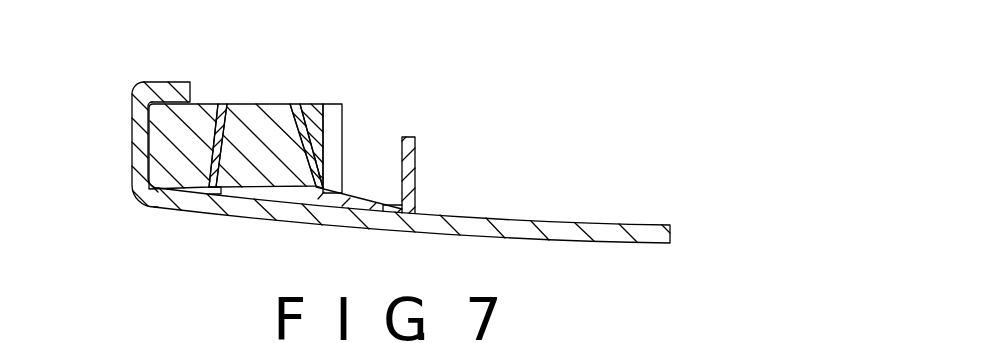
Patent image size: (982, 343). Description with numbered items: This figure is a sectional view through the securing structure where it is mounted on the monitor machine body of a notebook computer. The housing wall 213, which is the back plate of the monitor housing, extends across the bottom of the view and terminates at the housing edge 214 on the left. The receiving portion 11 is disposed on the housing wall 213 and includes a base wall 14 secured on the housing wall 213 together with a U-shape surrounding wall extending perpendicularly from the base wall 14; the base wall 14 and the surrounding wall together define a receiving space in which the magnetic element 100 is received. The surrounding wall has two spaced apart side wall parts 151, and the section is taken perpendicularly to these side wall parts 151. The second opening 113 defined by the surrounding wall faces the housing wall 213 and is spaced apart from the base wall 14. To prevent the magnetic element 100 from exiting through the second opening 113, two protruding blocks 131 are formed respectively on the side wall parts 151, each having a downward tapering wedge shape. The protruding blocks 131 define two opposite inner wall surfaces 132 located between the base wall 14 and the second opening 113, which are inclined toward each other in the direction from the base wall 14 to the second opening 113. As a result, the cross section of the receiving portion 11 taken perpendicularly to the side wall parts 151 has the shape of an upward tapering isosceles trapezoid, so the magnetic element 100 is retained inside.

The receiving portion 11 is at (160, 82).
The second opening 113 is at (229, 104).
The protruding blocks 131 is at (222, 106).
The inner wall surfaces 132 is at (228, 105).
The side wall parts 151 is at (312, 125).
The magnetic element 100 is at (312, 160).
The housing edge 214 is at (138, 155).
The base wall 14 is at (262, 191).
The housing wall 213 is at (290, 214).